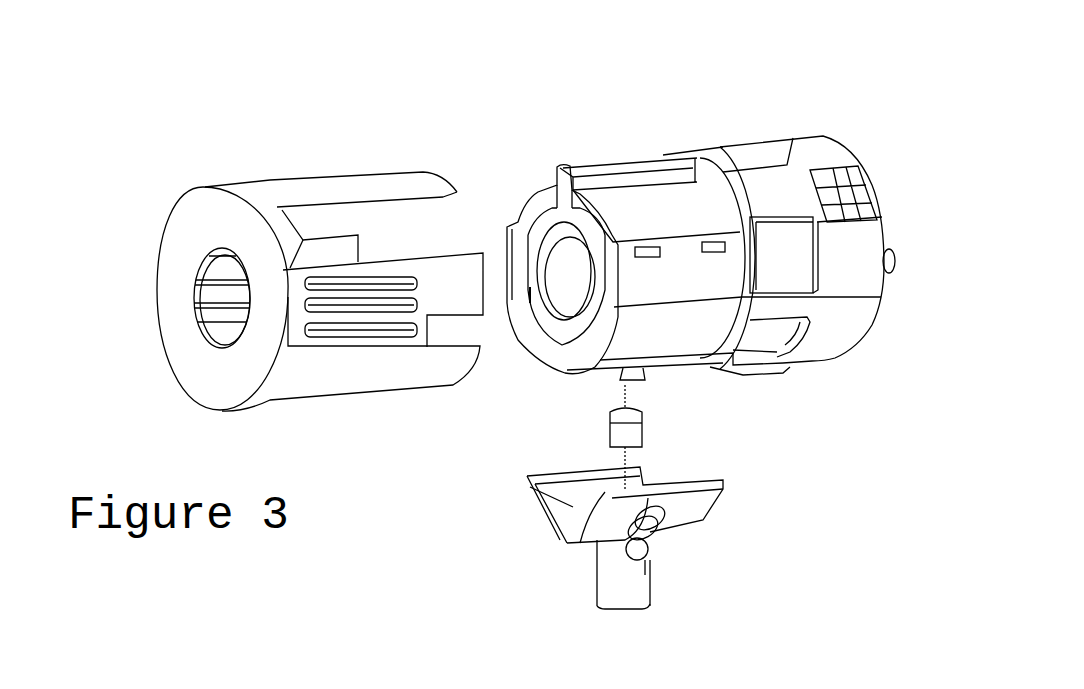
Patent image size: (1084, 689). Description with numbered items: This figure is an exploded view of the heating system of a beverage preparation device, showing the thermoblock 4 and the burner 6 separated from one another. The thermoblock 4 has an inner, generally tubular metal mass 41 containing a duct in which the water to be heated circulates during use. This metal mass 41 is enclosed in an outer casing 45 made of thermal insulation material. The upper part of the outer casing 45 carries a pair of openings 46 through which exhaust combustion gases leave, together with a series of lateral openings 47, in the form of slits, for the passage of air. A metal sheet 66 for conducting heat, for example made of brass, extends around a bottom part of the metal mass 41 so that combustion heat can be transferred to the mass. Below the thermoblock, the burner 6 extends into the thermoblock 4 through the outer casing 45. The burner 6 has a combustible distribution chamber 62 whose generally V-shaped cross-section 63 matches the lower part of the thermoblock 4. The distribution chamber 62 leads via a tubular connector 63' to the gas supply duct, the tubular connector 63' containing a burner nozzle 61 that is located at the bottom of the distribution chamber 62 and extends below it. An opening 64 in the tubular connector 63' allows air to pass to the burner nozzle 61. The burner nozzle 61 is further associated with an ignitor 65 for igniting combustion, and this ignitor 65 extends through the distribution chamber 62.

The thermoblock 4 is at (452, 84).
The metal mass 41 is at (555, 208).
The outer casing 45 is at (192, 250).
The openings 46 is at (395, 227).
The lateral openings 47 is at (343, 327).
The metal sheet 66 is at (670, 333).
The burner 6 is at (553, 590).
The burner nozzle 61 is at (623, 425).
The combustible distribution chamber 62 is at (567, 537).
The V-shaped cross-section 63 is at (555, 505).
The tubular connector 63' is at (684, 616).
The opening 64 is at (633, 552).
The ignitor 65 is at (657, 522).